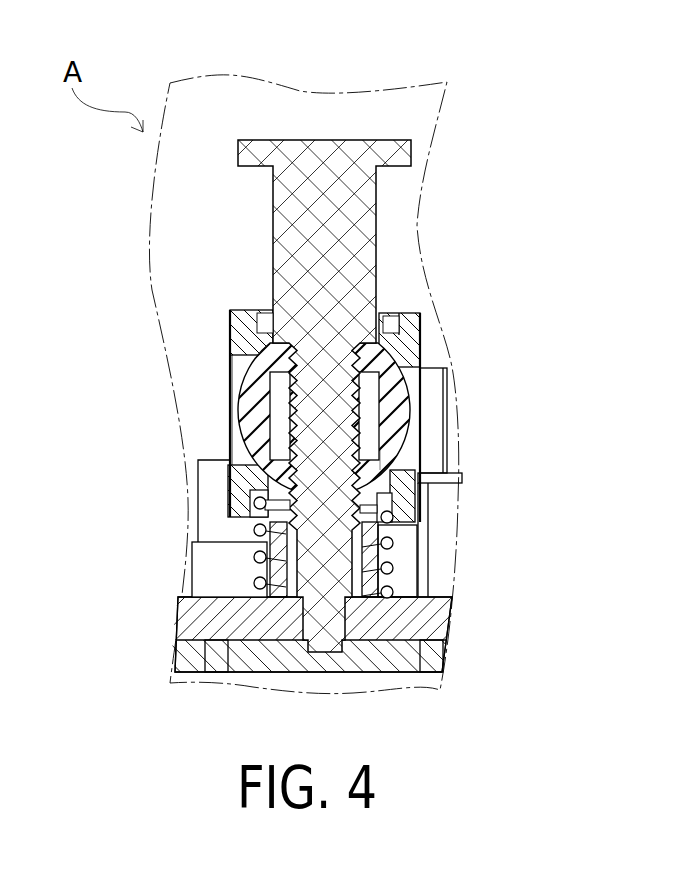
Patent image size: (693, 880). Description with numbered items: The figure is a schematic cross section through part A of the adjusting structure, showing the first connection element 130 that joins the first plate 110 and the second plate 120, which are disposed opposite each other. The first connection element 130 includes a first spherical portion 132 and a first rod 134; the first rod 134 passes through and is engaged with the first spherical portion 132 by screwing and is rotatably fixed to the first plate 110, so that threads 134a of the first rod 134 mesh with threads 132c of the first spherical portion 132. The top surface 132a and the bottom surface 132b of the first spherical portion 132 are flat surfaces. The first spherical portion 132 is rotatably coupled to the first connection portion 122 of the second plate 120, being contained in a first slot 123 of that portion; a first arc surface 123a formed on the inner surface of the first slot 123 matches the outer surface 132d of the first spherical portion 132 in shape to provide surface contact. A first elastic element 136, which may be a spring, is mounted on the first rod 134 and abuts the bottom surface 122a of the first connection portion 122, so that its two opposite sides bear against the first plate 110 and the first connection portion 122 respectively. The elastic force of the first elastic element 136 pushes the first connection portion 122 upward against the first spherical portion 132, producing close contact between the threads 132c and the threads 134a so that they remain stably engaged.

The first plate 110 is at (428, 620).
The second plate 120 is at (222, 278).
The first connection element 130 is at (429, 117).
The first spherical portion 132 is at (346, 396).
The top surface 132a is at (424, 342).
The bottom surface 132b is at (392, 497).
The threads 132c is at (380, 455).
The outer surface 132d is at (230, 422).
The first rod 134 is at (358, 262).
The threads 134a is at (374, 411).
The first elastic element 136 is at (395, 541).
The first connection portion 122 is at (265, 482).
The bottom surface 122a is at (253, 522).
The first slot 123 is at (311, 430).
The first arc surface 123a is at (245, 488).